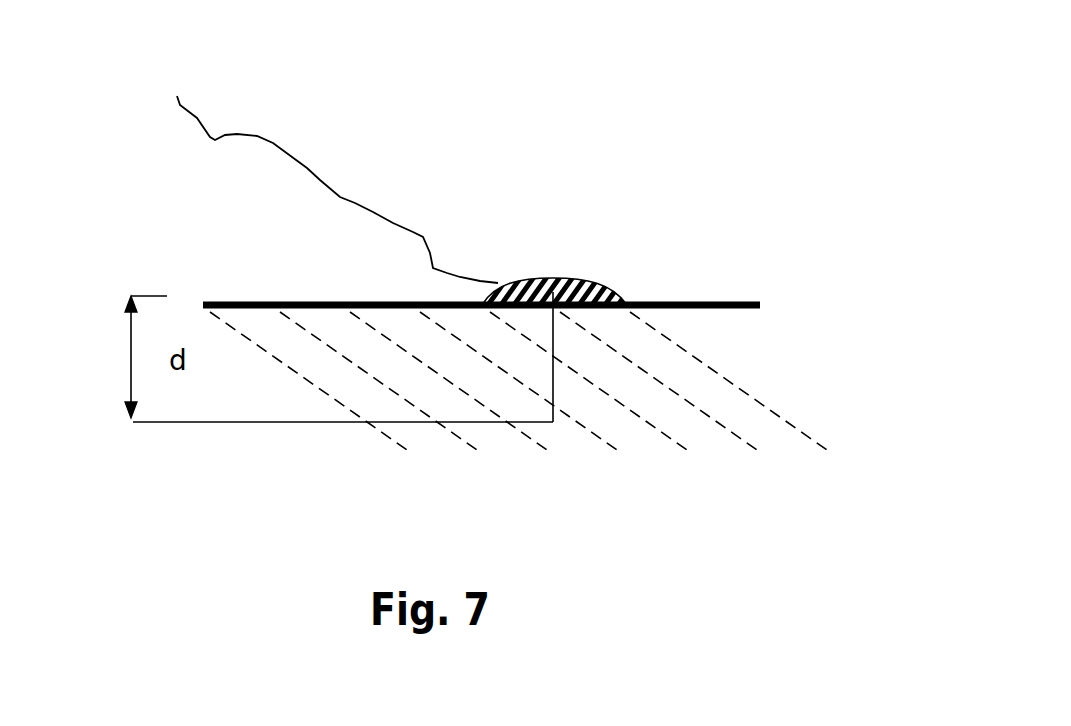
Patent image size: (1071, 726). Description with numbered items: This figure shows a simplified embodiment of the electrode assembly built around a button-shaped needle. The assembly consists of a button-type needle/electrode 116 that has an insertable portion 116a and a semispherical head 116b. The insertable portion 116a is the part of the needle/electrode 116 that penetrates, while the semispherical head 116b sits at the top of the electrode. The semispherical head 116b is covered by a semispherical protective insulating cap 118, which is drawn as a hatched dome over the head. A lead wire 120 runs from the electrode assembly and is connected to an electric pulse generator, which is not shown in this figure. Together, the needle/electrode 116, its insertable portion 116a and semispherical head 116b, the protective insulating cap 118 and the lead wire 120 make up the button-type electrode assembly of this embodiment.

The button-type needle/electrode 116 is at (562, 365).
The insertable portion 116a is at (553, 342).
The semispherical head 116b is at (582, 283).
The semispherical protective insulating cap 118 is at (542, 278).
The lead wire 120 is at (240, 145).